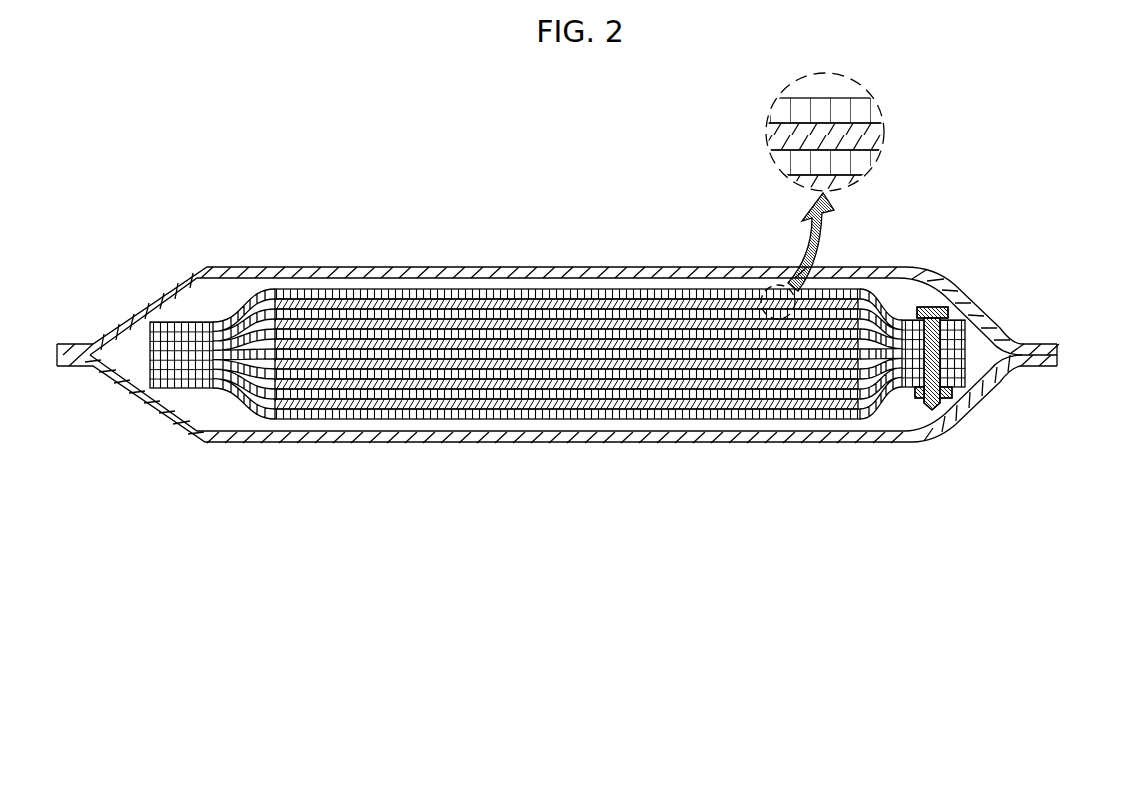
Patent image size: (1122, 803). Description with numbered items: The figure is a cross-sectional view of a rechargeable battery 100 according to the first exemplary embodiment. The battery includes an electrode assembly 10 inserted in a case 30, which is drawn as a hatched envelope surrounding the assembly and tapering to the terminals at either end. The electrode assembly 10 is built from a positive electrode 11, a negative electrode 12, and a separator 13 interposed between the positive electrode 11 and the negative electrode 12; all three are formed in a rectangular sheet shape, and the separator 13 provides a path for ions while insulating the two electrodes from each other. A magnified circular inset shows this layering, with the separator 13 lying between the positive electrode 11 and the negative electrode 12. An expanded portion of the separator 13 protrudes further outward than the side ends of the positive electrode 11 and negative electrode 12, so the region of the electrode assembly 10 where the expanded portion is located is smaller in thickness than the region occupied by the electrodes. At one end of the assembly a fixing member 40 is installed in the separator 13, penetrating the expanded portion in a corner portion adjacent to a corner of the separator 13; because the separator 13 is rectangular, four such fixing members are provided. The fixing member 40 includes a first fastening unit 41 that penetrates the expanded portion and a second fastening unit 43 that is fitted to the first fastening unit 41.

The rechargeable battery 100 is at (575, 188).
The electrode assembly 10 is at (628, 291).
The positive electrode 11 is at (875, 139).
The negative electrode 12 is at (845, 187).
The separator 13 is at (868, 112).
The case 30 is at (717, 272).
The fixing member 40 is at (940, 306).
The first fastening unit 41 is at (925, 306).
The second fastening unit 43 is at (947, 398).